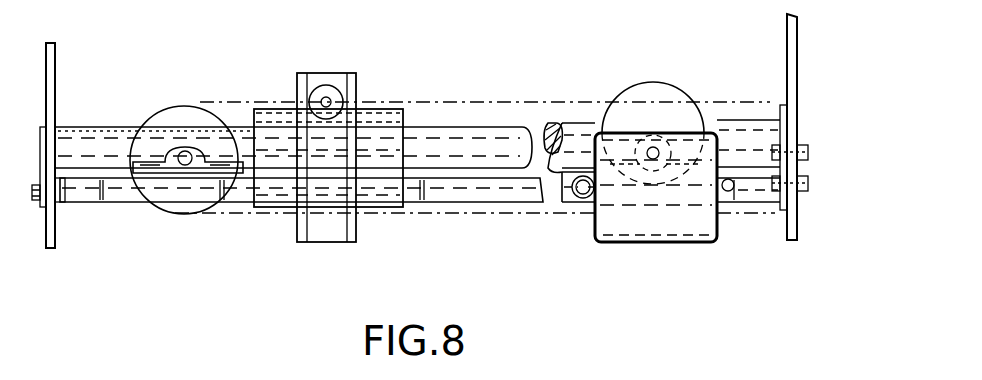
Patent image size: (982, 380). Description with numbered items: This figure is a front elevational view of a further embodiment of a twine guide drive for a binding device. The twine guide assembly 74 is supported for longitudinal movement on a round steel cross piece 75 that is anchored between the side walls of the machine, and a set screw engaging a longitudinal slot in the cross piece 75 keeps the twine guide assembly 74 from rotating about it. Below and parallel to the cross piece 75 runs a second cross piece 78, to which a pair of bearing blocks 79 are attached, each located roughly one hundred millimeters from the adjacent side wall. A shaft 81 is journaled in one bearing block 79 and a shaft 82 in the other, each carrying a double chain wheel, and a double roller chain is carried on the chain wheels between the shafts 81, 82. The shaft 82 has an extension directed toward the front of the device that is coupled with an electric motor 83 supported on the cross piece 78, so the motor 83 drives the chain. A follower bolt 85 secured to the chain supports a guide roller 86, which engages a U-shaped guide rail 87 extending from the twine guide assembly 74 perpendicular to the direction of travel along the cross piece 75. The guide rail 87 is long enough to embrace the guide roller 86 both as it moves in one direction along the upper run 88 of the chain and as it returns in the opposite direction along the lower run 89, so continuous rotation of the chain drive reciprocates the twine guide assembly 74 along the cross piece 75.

The twine guide assembly 74 is at (392, 110).
The round steel cross piece 75 is at (97, 133).
The second cross piece 78 is at (110, 193).
The bearing block 79 is at (170, 173).
The shaft 81 is at (187, 152).
The shaft 82 is at (654, 147).
The electric motor 83 is at (653, 230).
The follower bolt 85 is at (329, 100).
The guide roller 86 is at (320, 93).
The U-shaped guide rail 87 is at (327, 234).
The upper run 88 is at (547, 102).
The lower run 89 is at (500, 212).